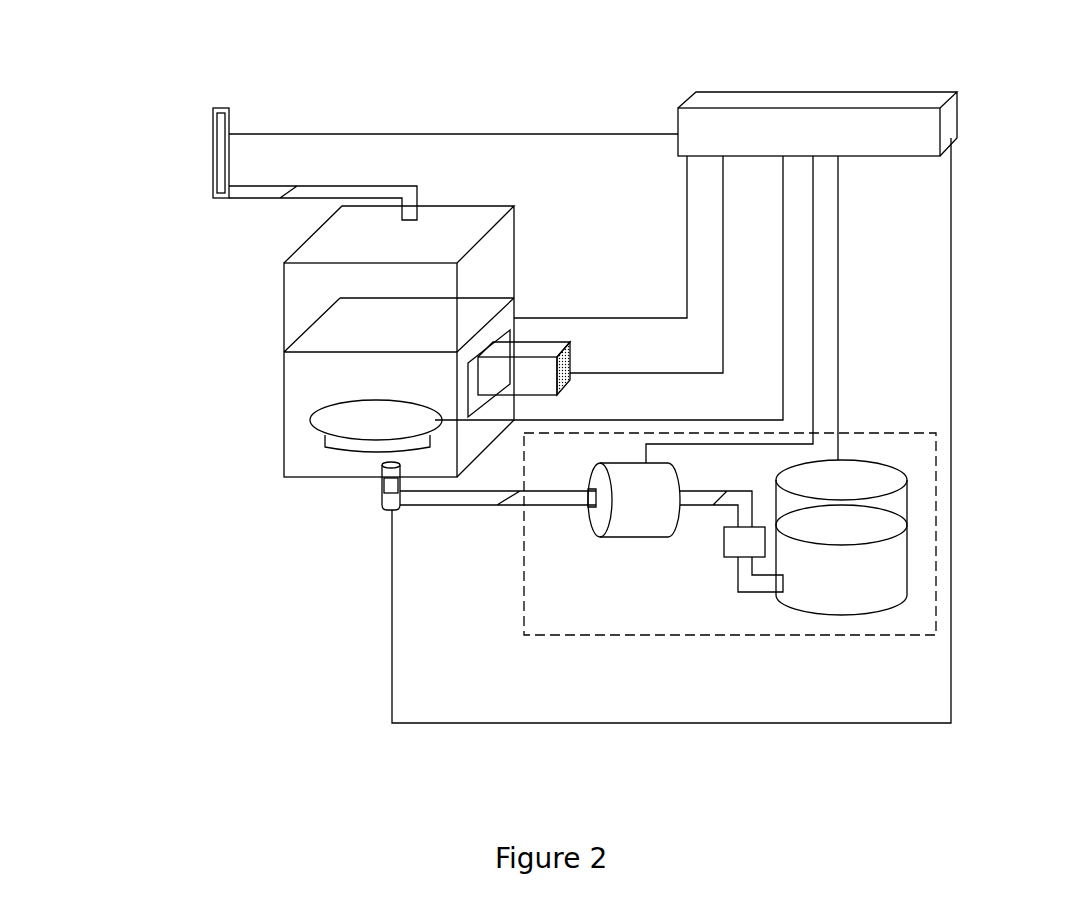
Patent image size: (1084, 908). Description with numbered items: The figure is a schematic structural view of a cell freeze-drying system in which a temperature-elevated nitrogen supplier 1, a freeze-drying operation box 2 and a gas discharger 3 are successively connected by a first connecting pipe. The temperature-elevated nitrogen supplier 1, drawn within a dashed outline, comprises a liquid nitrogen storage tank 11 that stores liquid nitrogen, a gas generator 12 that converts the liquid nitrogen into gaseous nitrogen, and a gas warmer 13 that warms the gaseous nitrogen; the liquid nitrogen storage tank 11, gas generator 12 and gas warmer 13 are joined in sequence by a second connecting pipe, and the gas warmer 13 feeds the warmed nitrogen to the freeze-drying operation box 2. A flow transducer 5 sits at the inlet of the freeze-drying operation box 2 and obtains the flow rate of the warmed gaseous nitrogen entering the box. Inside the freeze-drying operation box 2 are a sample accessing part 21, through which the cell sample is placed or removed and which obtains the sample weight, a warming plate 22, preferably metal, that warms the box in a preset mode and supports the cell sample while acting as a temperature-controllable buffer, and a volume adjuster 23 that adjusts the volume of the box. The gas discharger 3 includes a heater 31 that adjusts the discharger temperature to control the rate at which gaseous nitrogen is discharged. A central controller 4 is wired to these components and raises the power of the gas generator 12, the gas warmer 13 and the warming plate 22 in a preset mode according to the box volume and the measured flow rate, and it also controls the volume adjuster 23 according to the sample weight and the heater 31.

The temperature-elevated nitrogen supplier 1 is at (673, 636).
The liquid nitrogen storage tank 11 is at (812, 615).
The gas generator 12 is at (724, 552).
The gas warmer 13 is at (642, 527).
The freeze-drying operation box 2 is at (285, 290).
The sample accessing part 21 is at (570, 343).
The warming plate 22 is at (325, 420).
The volume adjuster 23 is at (303, 340).
The gas discharger 3 is at (215, 150).
The heater 31 is at (223, 125).
The central controller 4 is at (843, 125).
The flow transducer 5 is at (390, 488).